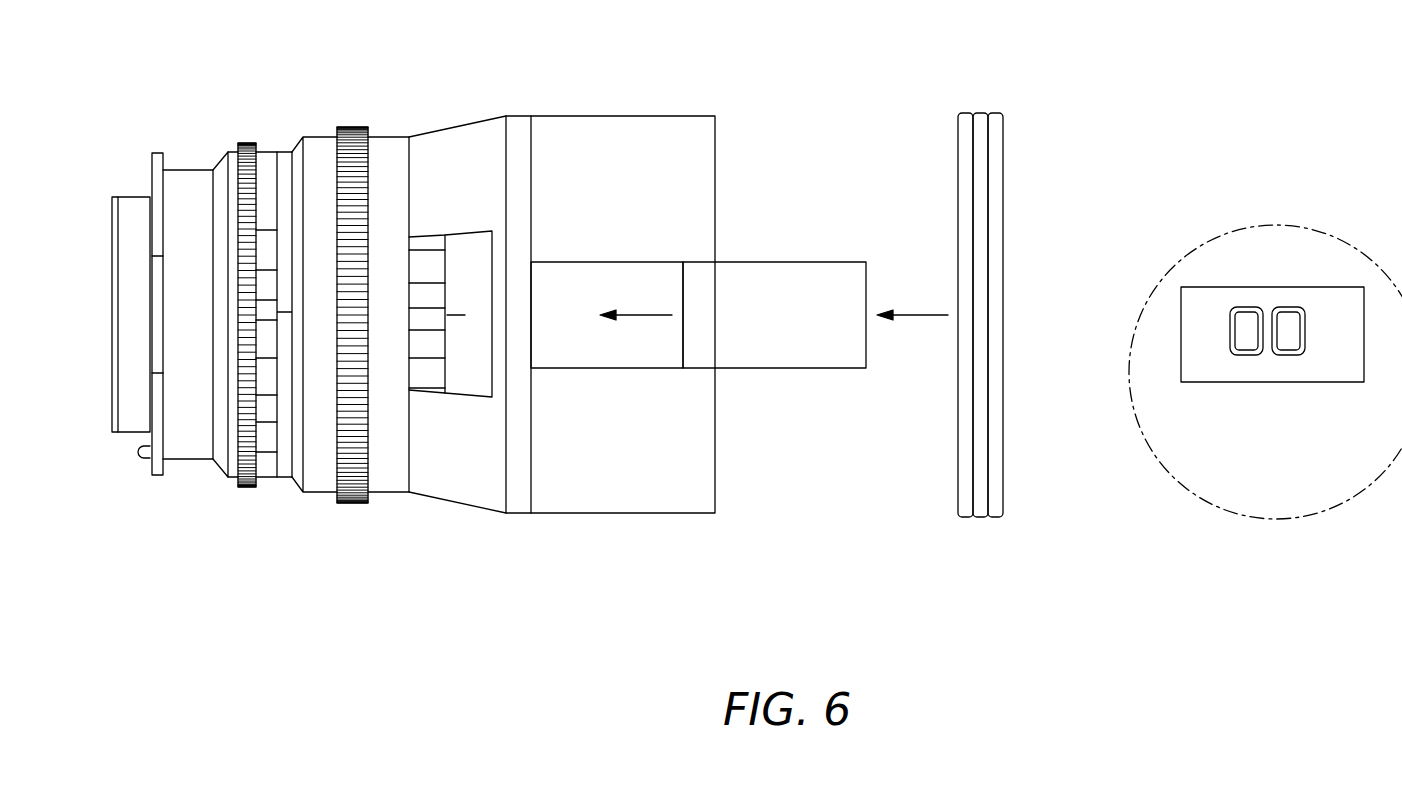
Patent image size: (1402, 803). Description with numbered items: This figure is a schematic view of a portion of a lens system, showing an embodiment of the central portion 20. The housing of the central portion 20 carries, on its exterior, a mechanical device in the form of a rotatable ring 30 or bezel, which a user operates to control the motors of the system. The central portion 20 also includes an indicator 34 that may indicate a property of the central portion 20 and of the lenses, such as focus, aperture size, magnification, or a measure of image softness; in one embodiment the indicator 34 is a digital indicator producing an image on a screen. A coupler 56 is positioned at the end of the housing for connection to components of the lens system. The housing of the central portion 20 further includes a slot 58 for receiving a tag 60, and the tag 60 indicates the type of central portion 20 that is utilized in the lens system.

The central section 20 is at (458, 505).
The coupler 56 is at (150, 165).
The rotatable ring 30 is at (353, 127).
The indicator 34 is at (427, 250).
The slot 58 is at (617, 262).
The tag 60 is at (788, 262).